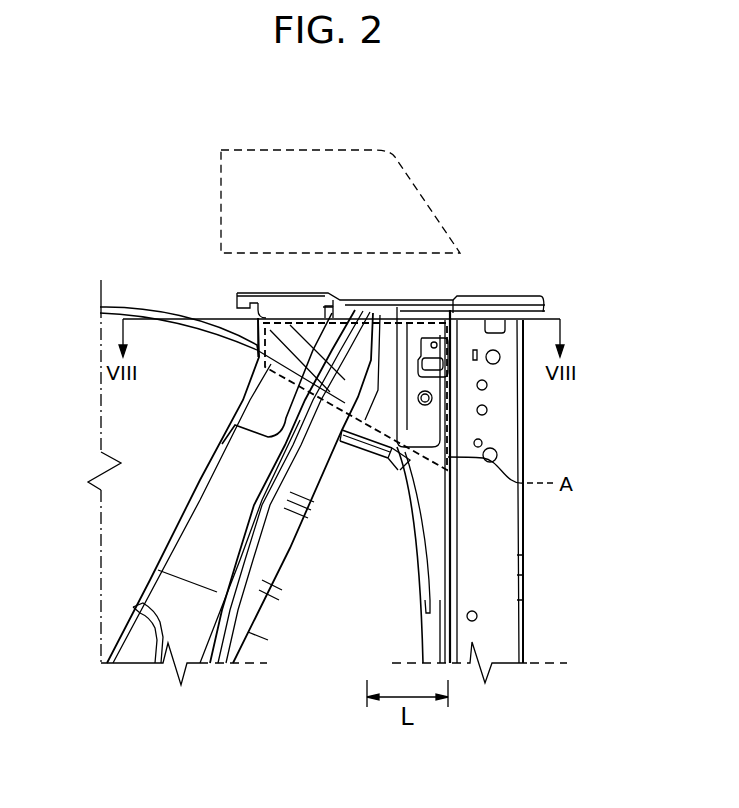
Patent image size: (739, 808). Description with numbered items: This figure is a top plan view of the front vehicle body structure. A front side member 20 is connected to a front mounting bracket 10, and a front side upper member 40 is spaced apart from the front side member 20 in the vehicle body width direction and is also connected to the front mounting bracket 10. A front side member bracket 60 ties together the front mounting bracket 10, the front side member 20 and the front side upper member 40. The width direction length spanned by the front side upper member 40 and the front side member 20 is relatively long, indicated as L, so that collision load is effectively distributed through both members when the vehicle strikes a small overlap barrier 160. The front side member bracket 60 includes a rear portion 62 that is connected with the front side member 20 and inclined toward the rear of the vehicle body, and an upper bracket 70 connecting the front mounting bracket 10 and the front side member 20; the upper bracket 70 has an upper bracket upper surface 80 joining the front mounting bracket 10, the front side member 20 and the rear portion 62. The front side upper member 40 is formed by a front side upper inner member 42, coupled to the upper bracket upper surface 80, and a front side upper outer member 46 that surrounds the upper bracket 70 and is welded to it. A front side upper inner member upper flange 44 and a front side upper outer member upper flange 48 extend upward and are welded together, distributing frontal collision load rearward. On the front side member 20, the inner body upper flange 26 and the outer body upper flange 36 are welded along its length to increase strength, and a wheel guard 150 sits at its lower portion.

The front mounting bracket 10 is at (523, 290).
The front side member 20 is at (542, 433).
The inner body upper flange 26 is at (465, 552).
The outer body upper flange 36 is at (435, 595).
The front side upper member 40 is at (270, 636).
The front side upper inner member 42 is at (258, 597).
The front side upper inner member upper flange 44 is at (258, 536).
The front side upper outer member 46 is at (205, 524).
The front side upper outer member upper flange 48 is at (240, 513).
The front side member bracket 60 is at (376, 480).
The rear portion 62 is at (352, 460).
The upper bracket 70 is at (394, 315).
The upper bracket upper surface 80 is at (415, 337).
The wheel guard 150 is at (130, 403).
The small overlap barrier 160 is at (418, 185).